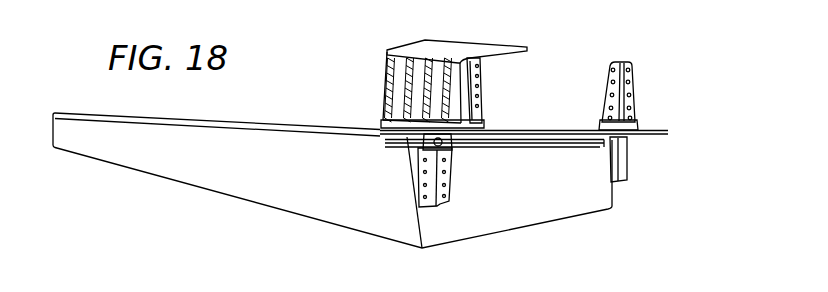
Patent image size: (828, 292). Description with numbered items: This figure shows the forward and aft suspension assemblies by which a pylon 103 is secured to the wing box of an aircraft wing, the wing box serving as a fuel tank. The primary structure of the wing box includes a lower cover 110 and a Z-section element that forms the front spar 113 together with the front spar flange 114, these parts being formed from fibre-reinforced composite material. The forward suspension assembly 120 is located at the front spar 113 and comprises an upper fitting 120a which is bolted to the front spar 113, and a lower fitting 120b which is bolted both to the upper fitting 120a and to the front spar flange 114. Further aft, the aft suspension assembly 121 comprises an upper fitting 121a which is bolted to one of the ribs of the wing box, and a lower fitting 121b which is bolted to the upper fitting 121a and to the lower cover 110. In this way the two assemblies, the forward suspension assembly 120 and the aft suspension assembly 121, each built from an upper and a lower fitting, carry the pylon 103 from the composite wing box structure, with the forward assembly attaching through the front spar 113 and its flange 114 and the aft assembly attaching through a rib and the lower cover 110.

The pylon 103 is at (480, 208).
The lower cover 110 is at (538, 135).
The front spar 113 is at (476, 89).
The front spar flange 114 is at (461, 122).
The forward suspension assembly 120 is at (431, 149).
The upper fitting 120a is at (388, 90).
The lower fitting 120b is at (418, 171).
The aft suspension assembly 121 is at (628, 148).
The upper fitting 121a is at (610, 70).
The lower fitting 121b is at (625, 153).